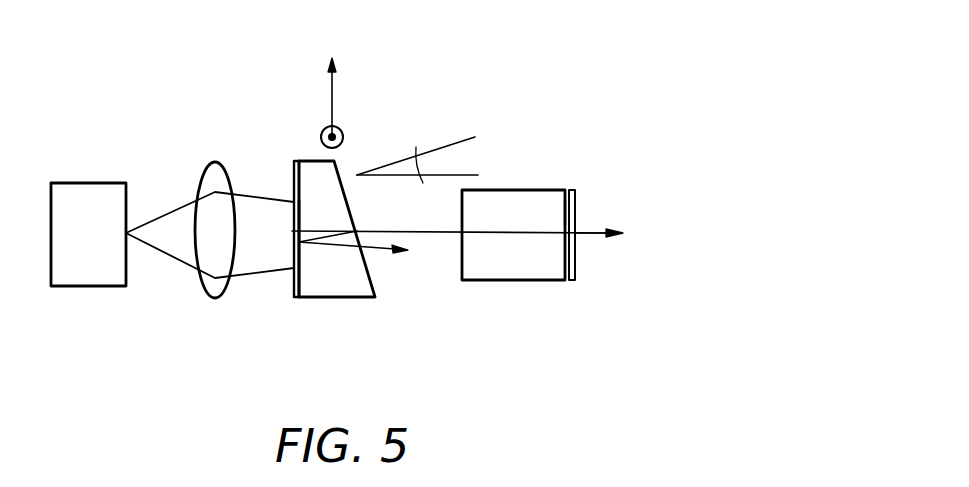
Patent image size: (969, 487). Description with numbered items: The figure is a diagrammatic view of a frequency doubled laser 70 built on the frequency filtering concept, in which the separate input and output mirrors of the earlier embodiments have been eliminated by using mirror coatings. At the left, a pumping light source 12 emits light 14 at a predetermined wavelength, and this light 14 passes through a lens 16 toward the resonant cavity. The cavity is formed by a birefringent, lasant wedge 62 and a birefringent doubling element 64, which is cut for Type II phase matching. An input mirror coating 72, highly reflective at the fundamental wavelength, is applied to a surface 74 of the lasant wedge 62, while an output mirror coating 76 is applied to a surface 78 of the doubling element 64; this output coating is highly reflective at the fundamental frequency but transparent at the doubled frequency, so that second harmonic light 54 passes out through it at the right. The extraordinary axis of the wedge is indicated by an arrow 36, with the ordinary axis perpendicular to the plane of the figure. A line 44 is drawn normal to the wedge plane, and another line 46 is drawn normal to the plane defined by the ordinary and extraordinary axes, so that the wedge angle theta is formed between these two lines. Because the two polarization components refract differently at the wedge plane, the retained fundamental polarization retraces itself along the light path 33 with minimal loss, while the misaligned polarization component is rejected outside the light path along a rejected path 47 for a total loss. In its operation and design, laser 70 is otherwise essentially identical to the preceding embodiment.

The pumping light source 12 is at (75, 250).
The light 14 is at (192, 199).
The lens 16 is at (190, 260).
The light path 33 is at (449, 279).
The arrow 36 is at (332, 95).
The line 44 is at (427, 130).
The line 46 is at (440, 158).
The rejected path 47 is at (366, 277).
The light 54 is at (607, 210).
The lasant wedge 62 is at (337, 266).
The birefringent doubling element 64 is at (528, 210).
The laser 70 is at (578, 35).
The input mirror coating 72 is at (261, 211).
The surface 74 is at (300, 279).
The output mirror coating 76 is at (613, 242).
The surface 78 is at (565, 213).